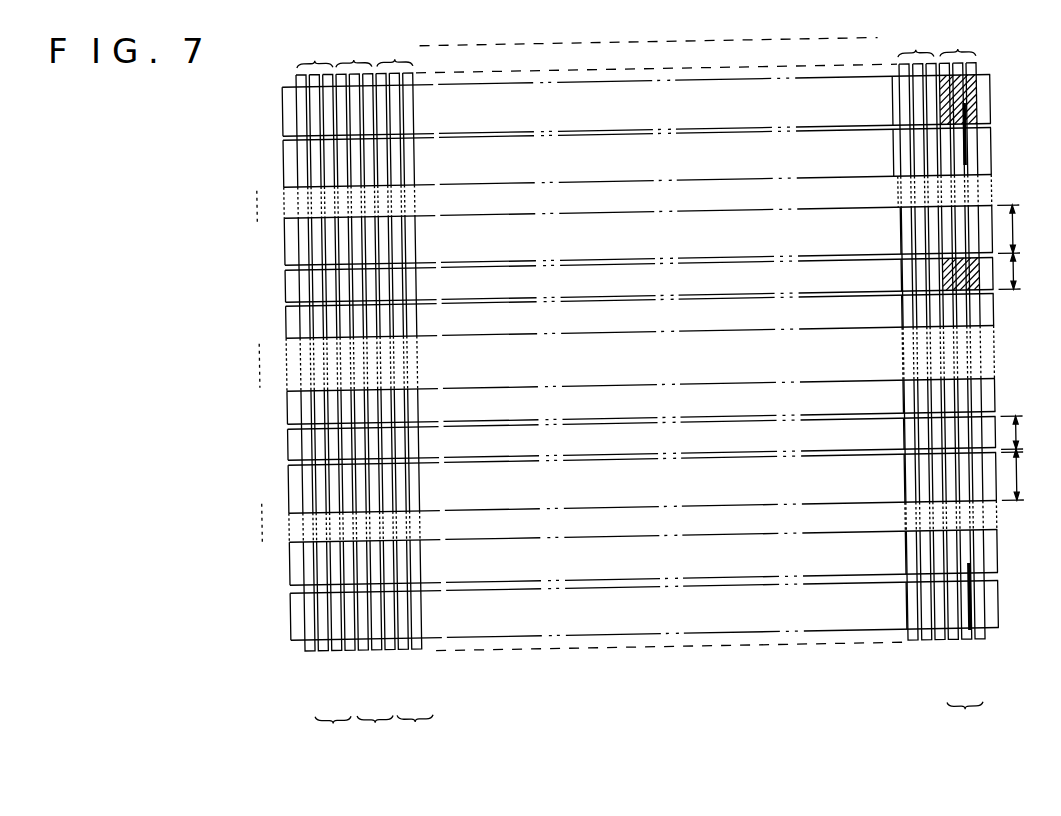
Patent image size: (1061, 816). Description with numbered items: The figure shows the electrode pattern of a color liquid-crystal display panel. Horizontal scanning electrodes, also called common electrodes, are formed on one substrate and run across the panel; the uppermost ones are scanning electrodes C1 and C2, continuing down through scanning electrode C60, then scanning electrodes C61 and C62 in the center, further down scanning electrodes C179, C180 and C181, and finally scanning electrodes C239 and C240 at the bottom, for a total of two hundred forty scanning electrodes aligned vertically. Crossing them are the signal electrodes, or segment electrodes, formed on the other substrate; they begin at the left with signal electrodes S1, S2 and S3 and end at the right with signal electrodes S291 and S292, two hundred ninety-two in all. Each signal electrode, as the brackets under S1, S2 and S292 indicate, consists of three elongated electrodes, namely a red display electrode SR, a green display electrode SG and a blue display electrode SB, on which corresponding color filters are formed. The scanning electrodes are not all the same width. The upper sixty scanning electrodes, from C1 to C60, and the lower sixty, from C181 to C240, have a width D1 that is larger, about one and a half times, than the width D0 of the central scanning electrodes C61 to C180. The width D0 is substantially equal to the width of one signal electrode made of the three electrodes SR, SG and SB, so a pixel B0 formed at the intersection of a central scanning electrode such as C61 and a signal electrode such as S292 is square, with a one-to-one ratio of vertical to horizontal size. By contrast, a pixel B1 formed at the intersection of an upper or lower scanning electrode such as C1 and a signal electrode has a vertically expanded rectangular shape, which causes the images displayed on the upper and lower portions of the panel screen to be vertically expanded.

The scanning electrode C1 is at (614, 106).
The scanning electrode C2 is at (615, 158).
The scanning electrode C60 is at (611, 236).
The scanning electrode C61 is at (611, 281).
The scanning electrode C62 is at (612, 316).
The scanning electrode C179 is at (606, 402).
The scanning electrode C180 is at (607, 439).
The scanning electrode C181 is at (606, 484).
The scanning electrode C239 is at (609, 558).
The scanning electrode C240 is at (609, 611).
The signal electrode S1 is at (323, 396).
The signal electrode S2 is at (364, 395).
The signal electrode S3 is at (404, 395).
The signal electrode S291 is at (914, 333).
The signal electrode S292 is at (970, 385).
The red display electrode SR is at (938, 668).
The green display electrode SG is at (958, 686).
The blue display electrode SB is at (980, 668).
The pixel B1 is at (975, 114).
The pixel B0 is at (974, 294).
The width of upper and lower scanning electrodes D1 is at (1022, 353).
The width of central scanning electrodes D0 is at (1024, 351).